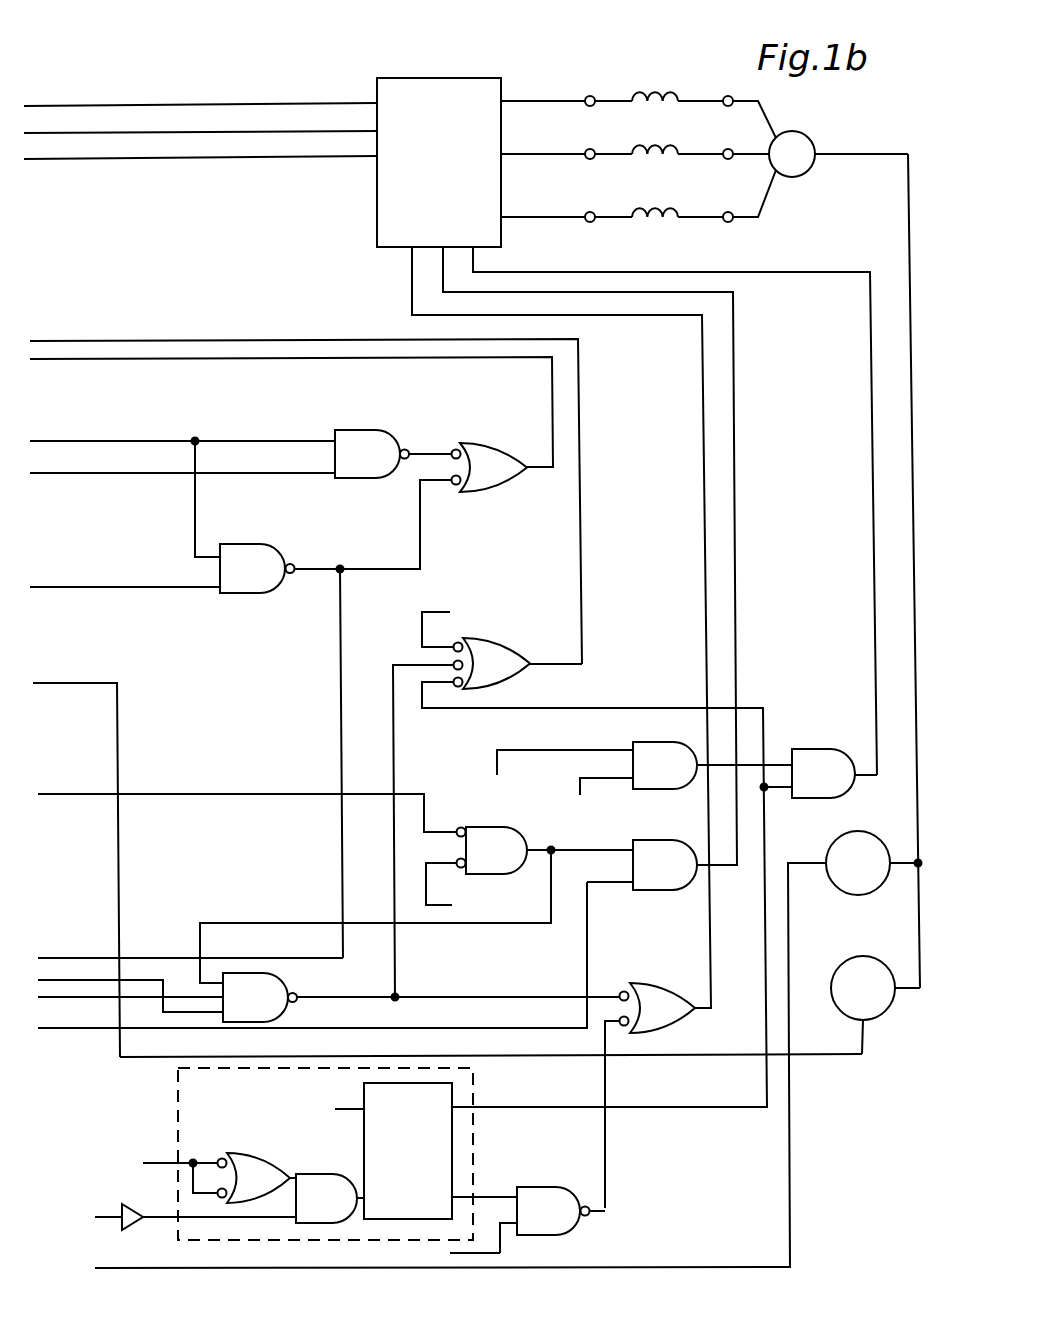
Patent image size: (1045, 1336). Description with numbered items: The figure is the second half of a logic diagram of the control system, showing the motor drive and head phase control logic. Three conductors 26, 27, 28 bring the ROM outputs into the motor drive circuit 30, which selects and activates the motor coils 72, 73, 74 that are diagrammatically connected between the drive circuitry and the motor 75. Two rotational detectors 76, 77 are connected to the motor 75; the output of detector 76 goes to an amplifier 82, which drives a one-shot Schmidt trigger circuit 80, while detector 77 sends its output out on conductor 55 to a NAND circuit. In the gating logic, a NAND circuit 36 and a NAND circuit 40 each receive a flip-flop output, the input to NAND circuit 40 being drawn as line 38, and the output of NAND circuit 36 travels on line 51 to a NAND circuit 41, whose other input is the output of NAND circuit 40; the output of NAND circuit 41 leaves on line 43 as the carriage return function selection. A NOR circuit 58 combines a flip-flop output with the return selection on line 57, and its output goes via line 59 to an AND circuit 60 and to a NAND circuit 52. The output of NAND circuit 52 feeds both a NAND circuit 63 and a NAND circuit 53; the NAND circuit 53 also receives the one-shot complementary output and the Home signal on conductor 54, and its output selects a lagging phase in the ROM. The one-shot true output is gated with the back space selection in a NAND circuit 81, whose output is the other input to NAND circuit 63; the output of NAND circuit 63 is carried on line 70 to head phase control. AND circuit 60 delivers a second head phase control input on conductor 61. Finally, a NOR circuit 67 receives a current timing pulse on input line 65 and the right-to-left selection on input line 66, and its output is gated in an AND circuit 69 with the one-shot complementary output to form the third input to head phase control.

The conductor 26 is at (207, 160).
The conductor 27 is at (186, 131).
The conductor 28 is at (296, 104).
The motor drive circuit 30 is at (484, 79).
The NAND circuit 36 is at (268, 553).
The signal line 38 is at (262, 440).
The NAND circuit 40 is at (375, 431).
The NAND circuit 41 is at (490, 446).
The line 43 is at (168, 361).
The line 51 is at (368, 568).
The NAND circuit 52 is at (270, 990).
The NAND circuit 53 is at (505, 650).
The conductor 54 is at (432, 612).
The conductor 55 is at (737, 1050).
The line 57 is at (455, 903).
The NOR circuit 58 is at (500, 830).
The line 59 is at (539, 851).
The AND circuit 60 is at (672, 889).
The conductor 61 is at (735, 586).
The NAND circuit 63 is at (652, 986).
The input line 65 is at (497, 762).
The input line 66 is at (578, 790).
The NOR circuit 67 is at (678, 742).
The AND circuit 69 is at (822, 752).
The line 70 is at (704, 502).
The motor coil 72 is at (672, 84).
The motor coil 73 is at (672, 140).
The motor coil 74 is at (672, 200).
The motor 75 is at (806, 135).
The rotational detector 76 is at (858, 832).
The rotational detector 77 is at (846, 960).
The one-shot Schmidt trigger circuit 80 is at (473, 1150).
The NAND circuit 81 is at (545, 1195).
The amplifier 82 is at (126, 1195).